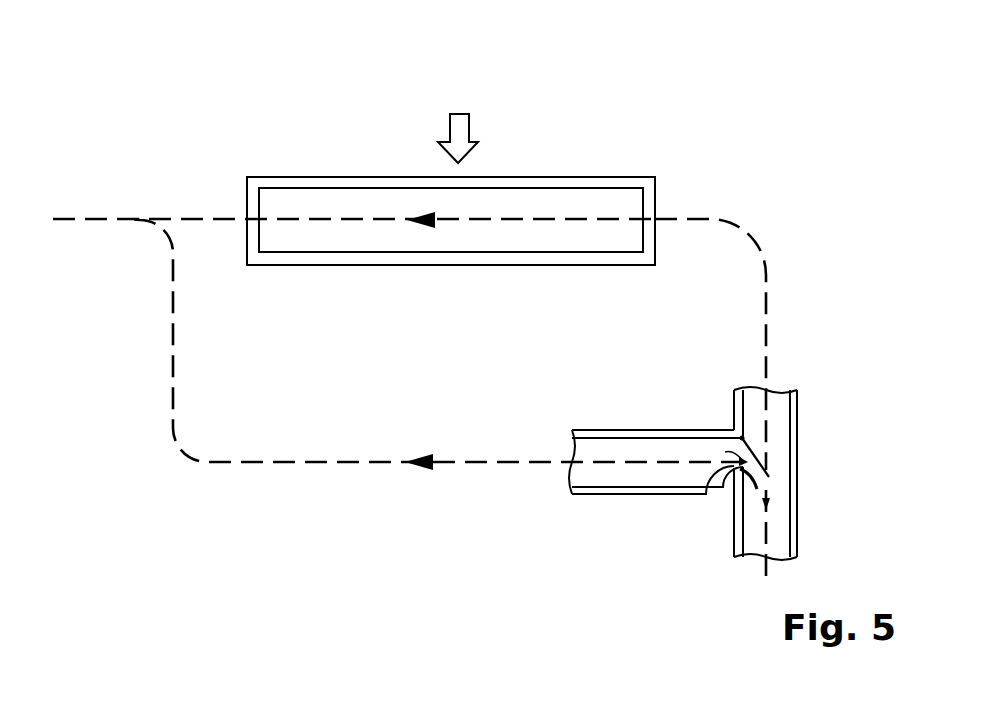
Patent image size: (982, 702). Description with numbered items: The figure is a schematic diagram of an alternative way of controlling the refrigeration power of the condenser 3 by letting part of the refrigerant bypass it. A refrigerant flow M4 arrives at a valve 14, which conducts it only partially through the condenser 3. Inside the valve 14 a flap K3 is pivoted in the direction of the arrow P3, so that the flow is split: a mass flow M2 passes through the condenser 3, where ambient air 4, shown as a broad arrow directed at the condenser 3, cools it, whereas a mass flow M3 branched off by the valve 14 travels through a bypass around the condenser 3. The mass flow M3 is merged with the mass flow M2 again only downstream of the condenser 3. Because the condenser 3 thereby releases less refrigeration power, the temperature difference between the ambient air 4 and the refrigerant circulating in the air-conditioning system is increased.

The condenser 3 is at (613, 177).
The ambient air 4 is at (458, 122).
The valve 14 is at (782, 458).
The flap K3 is at (758, 458).
The arrow P3 is at (725, 452).
The mass flow M2 is at (712, 219).
The mass flow M3 is at (340, 462).
The refrigerant flow M4 is at (67, 219).